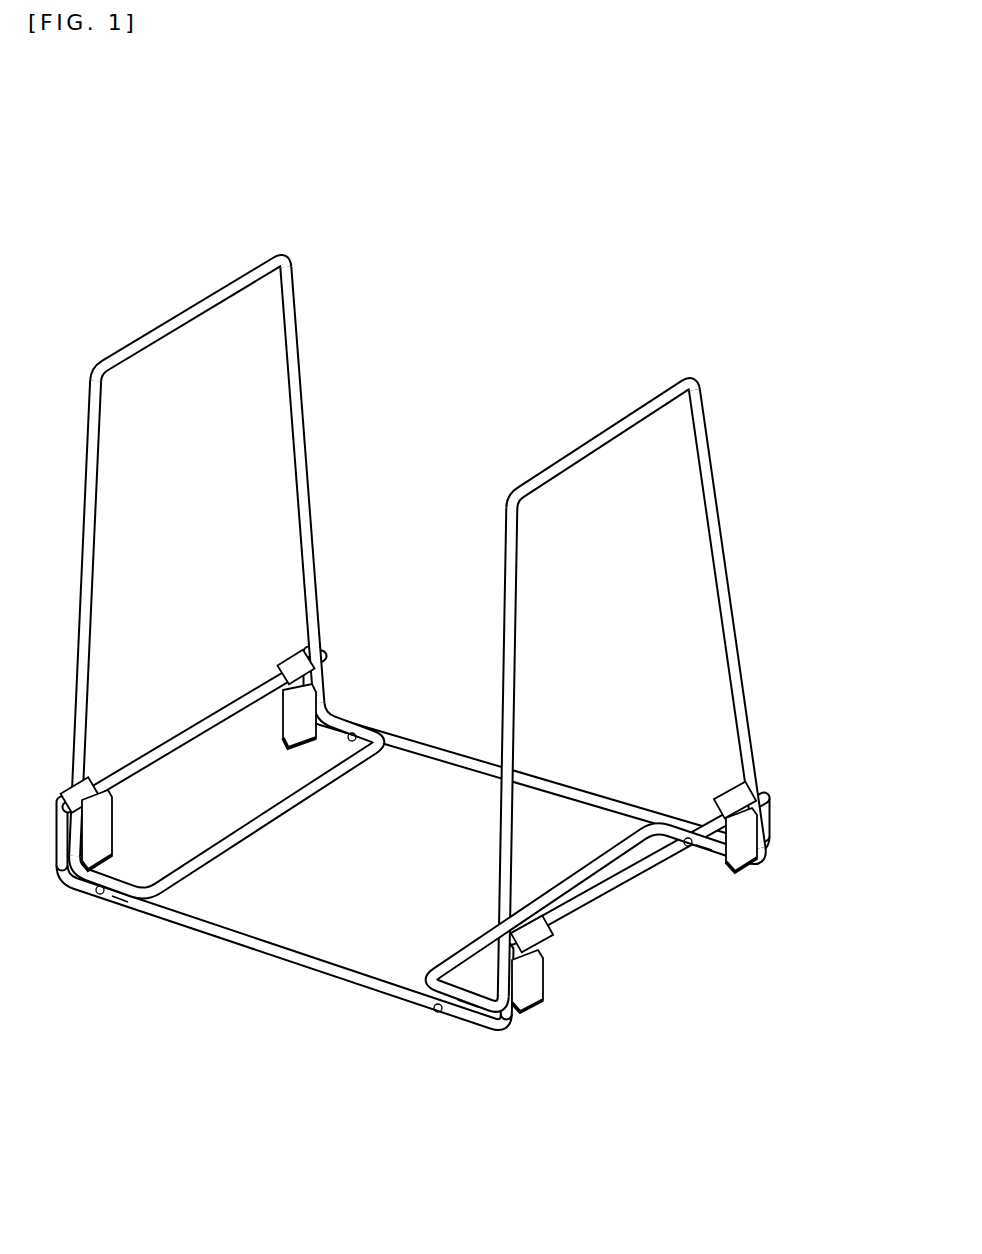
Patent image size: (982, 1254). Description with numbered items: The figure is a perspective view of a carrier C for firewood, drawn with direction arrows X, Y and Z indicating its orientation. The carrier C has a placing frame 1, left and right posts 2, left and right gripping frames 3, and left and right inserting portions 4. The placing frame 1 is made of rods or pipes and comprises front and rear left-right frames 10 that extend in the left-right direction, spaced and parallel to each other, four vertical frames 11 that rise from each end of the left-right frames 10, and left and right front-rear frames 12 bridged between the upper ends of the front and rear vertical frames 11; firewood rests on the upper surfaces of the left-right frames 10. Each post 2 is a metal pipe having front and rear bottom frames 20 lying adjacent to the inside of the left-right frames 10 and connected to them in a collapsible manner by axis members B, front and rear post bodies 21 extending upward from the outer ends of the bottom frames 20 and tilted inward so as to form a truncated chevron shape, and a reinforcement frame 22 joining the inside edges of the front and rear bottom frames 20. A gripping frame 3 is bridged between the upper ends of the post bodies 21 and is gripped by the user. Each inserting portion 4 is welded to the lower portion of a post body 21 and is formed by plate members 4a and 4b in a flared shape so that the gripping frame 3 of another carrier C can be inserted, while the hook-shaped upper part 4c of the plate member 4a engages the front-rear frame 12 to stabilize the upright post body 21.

The placing frame 1 is at (425, 860).
The post 2 is at (400, 623).
The gripping frame 3 is at (205, 292).
The inserting portion 4 is at (426, 825).
The plate member 4a is at (297, 708).
The plate member 4b is at (268, 712).
The engaging portion 4c is at (290, 652).
The left-right frame 10 is at (570, 790).
The vertical frame 11 is at (324, 668).
The front-rear frame 12 is at (210, 716).
The bottom frame 20 is at (338, 724).
The post body 21 is at (298, 440).
The reinforcement frame 22 is at (295, 814).
The axis member B is at (350, 740).
The carrier C is at (706, 256).
The X direction X is at (208, 1054).
The Y direction Y is at (730, 1026).
The Z direction Z is at (806, 635).